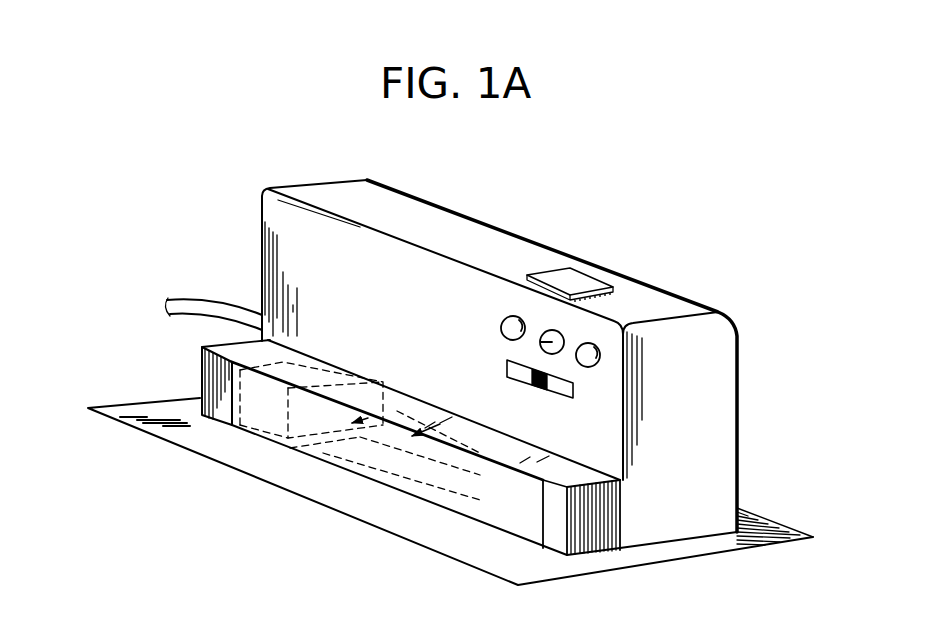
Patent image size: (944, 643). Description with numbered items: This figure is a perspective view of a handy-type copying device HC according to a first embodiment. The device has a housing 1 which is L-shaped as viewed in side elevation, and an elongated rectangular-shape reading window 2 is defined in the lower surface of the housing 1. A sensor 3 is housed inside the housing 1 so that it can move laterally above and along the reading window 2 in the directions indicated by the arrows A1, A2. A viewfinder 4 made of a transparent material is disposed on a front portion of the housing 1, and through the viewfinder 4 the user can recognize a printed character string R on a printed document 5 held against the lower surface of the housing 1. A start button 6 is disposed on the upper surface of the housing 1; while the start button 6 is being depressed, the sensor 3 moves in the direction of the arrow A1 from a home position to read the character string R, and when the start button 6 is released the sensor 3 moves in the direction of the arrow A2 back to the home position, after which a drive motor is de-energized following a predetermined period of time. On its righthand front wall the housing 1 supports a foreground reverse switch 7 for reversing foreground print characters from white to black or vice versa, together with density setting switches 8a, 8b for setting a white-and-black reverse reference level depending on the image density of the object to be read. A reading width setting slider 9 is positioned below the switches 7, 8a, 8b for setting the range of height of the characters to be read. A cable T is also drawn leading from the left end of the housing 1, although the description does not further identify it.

The handy-type copying device HC is at (556, 215).
The housing 1 is at (681, 287).
The start button 6 is at (581, 277).
The foreground reverse switch 7 is at (500, 325).
The density setting switch 8a is at (565, 341).
The density setting switch 8b is at (597, 366).
The reading width setting slider 9 is at (560, 389).
The cable T is at (214, 298).
The reading window 2 is at (502, 523).
The sensor 3 is at (247, 431).
The viewfinder 4 is at (503, 452).
The arrow A1 is at (398, 420).
The arrow A2 is at (456, 436).
The printed character string R is at (293, 455).
The printed document 5 is at (719, 553).